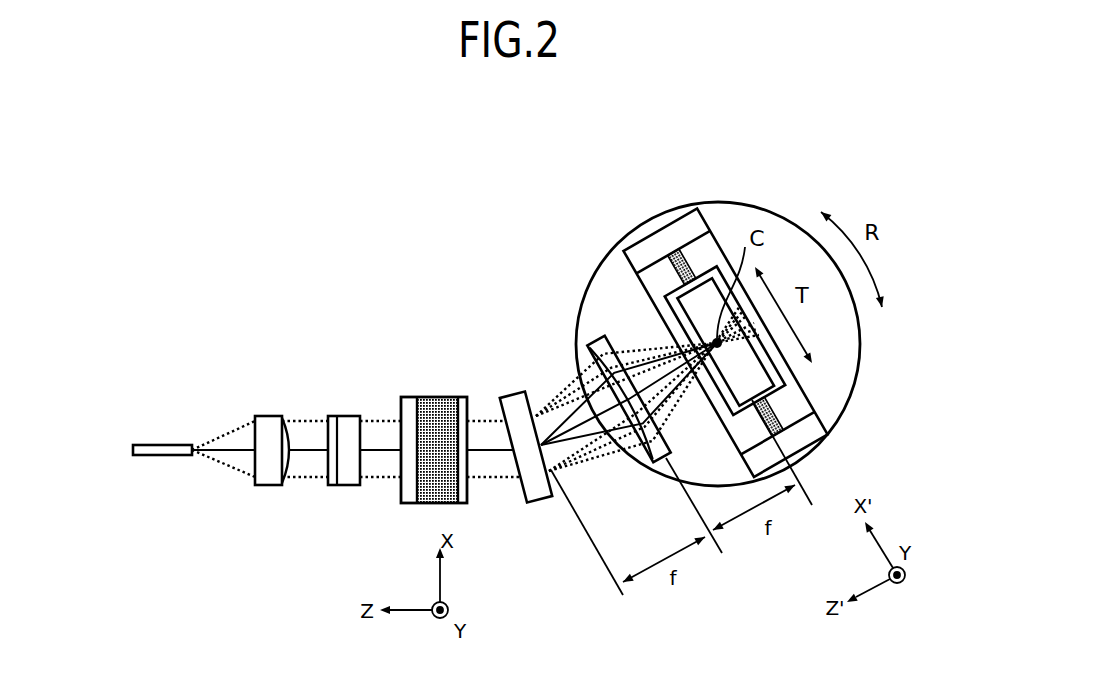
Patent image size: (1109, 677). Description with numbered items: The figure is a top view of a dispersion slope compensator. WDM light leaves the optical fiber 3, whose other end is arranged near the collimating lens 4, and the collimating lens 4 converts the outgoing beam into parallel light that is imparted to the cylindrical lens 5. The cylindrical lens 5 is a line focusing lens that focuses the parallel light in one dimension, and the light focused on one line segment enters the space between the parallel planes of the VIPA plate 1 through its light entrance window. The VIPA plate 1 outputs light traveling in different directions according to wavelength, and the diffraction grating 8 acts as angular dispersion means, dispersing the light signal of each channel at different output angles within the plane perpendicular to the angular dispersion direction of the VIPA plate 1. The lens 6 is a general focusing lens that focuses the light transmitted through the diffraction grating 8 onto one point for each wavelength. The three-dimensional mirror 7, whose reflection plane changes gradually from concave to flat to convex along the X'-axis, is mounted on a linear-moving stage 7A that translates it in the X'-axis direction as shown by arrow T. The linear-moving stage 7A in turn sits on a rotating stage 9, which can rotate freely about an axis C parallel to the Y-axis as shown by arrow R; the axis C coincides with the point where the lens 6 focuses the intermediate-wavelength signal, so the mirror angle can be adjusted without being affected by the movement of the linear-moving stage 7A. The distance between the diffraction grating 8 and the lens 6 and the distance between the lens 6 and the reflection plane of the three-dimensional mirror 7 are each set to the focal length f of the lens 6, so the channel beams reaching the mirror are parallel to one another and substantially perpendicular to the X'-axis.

The VIPA plate 1 is at (435, 397).
The optical fiber 3 is at (160, 446).
The collimating lens 4 is at (265, 416).
The cylindrical lens 5 is at (343, 416).
The lens 6 is at (590, 346).
The three-dimensional mirror 7 is at (708, 286).
The linear-moving stage 7A is at (655, 232).
The diffraction grating 8 is at (525, 392).
The rotating stage 9 is at (604, 256).